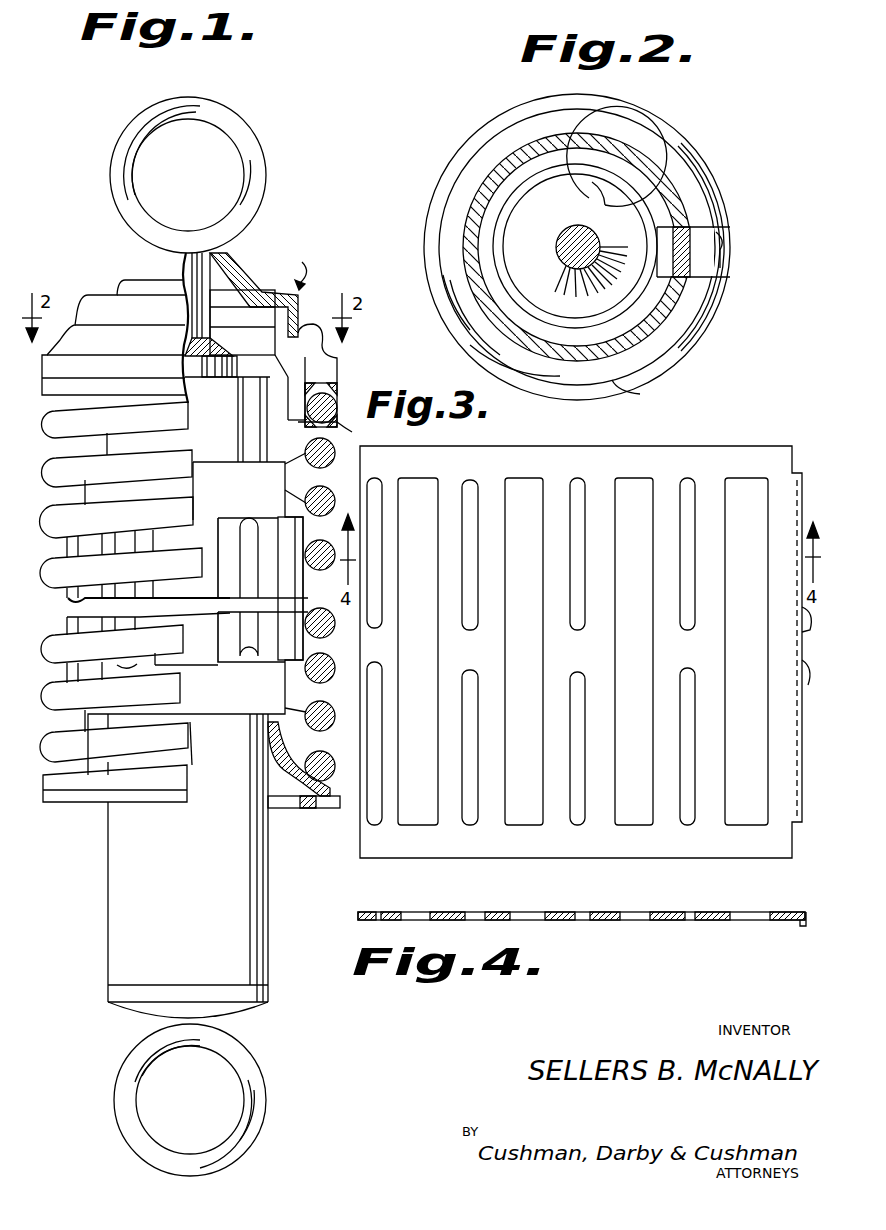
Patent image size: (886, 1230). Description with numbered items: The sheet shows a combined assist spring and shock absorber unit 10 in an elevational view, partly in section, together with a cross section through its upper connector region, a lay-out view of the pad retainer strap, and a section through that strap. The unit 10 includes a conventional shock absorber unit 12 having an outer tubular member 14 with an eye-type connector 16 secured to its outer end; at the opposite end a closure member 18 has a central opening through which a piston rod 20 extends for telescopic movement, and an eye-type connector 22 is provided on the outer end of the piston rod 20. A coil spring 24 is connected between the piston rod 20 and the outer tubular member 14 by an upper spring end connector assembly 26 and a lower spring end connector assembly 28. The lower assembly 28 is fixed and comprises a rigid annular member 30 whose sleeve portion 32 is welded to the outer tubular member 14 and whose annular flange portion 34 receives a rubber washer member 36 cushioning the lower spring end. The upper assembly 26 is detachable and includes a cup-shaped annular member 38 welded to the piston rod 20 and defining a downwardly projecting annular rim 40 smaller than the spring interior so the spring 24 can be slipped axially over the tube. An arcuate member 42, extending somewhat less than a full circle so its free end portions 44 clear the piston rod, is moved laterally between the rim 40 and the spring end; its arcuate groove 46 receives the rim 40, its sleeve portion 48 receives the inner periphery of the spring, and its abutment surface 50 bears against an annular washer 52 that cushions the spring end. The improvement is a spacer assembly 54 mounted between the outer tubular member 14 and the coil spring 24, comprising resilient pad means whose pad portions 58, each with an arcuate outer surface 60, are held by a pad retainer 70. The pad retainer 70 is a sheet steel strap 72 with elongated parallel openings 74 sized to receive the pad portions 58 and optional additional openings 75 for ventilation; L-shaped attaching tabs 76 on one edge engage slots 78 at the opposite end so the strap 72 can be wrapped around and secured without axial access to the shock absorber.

In FIG. 1, the combined assist spring and shock absorber unit 10 is at (295, 271).
In FIG. 2, the combined assist spring and shock absorber unit 10 is at (755, 148).
In FIG. 1, the shock absorber unit 12 is at (104, 924).
In FIG. 2, the shock absorber unit 12 is at (662, 213).
In FIG. 1, the outer tubular member 14 is at (240, 908).
In FIG. 1, the connector 16 is at (256, 1086).
In FIG. 1, the closure member 18 is at (232, 390).
In FIG. 2, the closure member 18 is at (608, 284).
In FIG. 1, the piston rod 20 is at (203, 278).
In FIG. 2, the piston rod 20 is at (607, 156).
In FIG. 1, the connector 22 is at (232, 118).
In FIG. 1, the coil spring 24 is at (282, 468).
In FIG. 1, the upper spring end connector assembly 26 is at (340, 352).
In FIG. 2, the upper spring end connector assembly 26 is at (712, 348).
In FIG. 1, the lower spring end connector assembly 28 is at (82, 815).
In FIG. 1, the rigid annular member 30 is at (272, 755).
In FIG. 1, the sleeve portion 32 is at (268, 740).
In FIG. 1, the annular flange portion 34 is at (180, 812).
In FIG. 1, the washer member 36 is at (300, 797).
In FIG. 1, the cup-shaped annular member 38 is at (150, 255).
In FIG. 1, the annular rim 40 is at (272, 338).
In FIG. 2, the annular rim 40 is at (482, 188).
In FIG. 1, the arcuate member 42 is at (322, 366).
In FIG. 2, the arcuate member 42 is at (626, 395).
In FIG. 2, the free end portions 44 is at (712, 270).
In FIG. 1, the arcuate groove 46 is at (297, 325).
In FIG. 2, the arcuate groove 46 is at (470, 243).
In FIG. 1, the sleeve portion 48 is at (340, 417).
In FIG. 1, the abutment surface 50 is at (330, 388).
In FIG. 1, the annular washer 52 is at (262, 400).
In FIG. 1, the spacer assembly 54 is at (72, 718).
In FIG. 1, the pad portions 58 is at (212, 670).
In FIG. 1, the arcuate outer surface 60 is at (206, 651).
In FIG. 3, the pad retainer 70 is at (763, 430).
In FIG. 4, the pad retainer 70 is at (670, 908).
In FIG. 3, the strap 72 is at (556, 426).
In FIG. 4, the strap 72 is at (562, 920).
In FIG. 1, the elongated parallel openings 74 is at (262, 505).
In FIG. 3, the elongated parallel openings 74 is at (440, 648).
In FIG. 4, the elongated parallel openings 74 is at (515, 912).
In FIG. 1, the additional elongated openings 75 is at (250, 583).
In FIG. 3, the additional elongated openings 75 is at (683, 542).
In FIG. 4, the additional elongated openings 75 is at (575, 912).
In FIG. 3, the attaching tabs 76 is at (800, 645).
In FIG. 4, the attaching tabs 76 is at (800, 912).
In FIG. 3, the slots 78 is at (373, 680).
In FIG. 4, the slots 78 is at (375, 912).